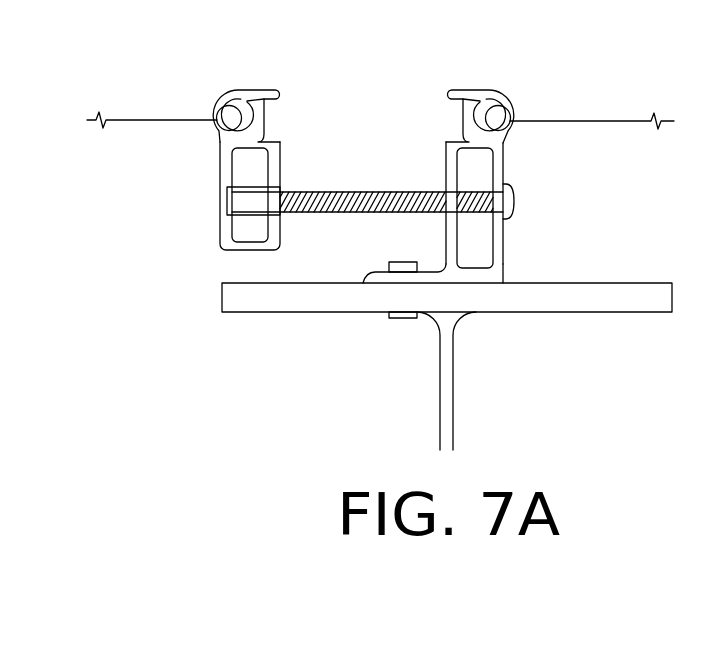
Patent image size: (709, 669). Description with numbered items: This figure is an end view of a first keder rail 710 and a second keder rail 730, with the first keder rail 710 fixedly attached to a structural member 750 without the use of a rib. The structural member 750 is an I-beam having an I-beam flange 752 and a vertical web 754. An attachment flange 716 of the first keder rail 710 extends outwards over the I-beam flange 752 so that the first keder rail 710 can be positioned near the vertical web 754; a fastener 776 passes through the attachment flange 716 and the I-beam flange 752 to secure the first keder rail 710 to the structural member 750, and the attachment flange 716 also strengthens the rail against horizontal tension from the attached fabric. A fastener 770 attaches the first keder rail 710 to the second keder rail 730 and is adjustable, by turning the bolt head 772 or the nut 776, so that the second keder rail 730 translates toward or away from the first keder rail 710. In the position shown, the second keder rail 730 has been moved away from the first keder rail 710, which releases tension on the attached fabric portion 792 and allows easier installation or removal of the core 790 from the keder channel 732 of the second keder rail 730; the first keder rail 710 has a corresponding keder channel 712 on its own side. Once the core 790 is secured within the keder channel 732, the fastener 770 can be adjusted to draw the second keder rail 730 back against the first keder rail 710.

The first keder rail 710 is at (533, 153).
The hook of second bracket 712 is at (503, 90).
The attachment flange 716 is at (342, 267).
The second keder rail 730 is at (193, 143).
The keder channel 732 is at (222, 89).
The structural member 750 is at (447, 367).
The I-beam flange 752 is at (447, 315).
The vertical web 754 is at (484, 381).
The fastener 770 is at (367, 165).
The bolt head 772 is at (556, 225).
The nut 776 is at (280, 277).
The core 790 is at (367, 144).
The fabric portion 792 is at (369, 136).